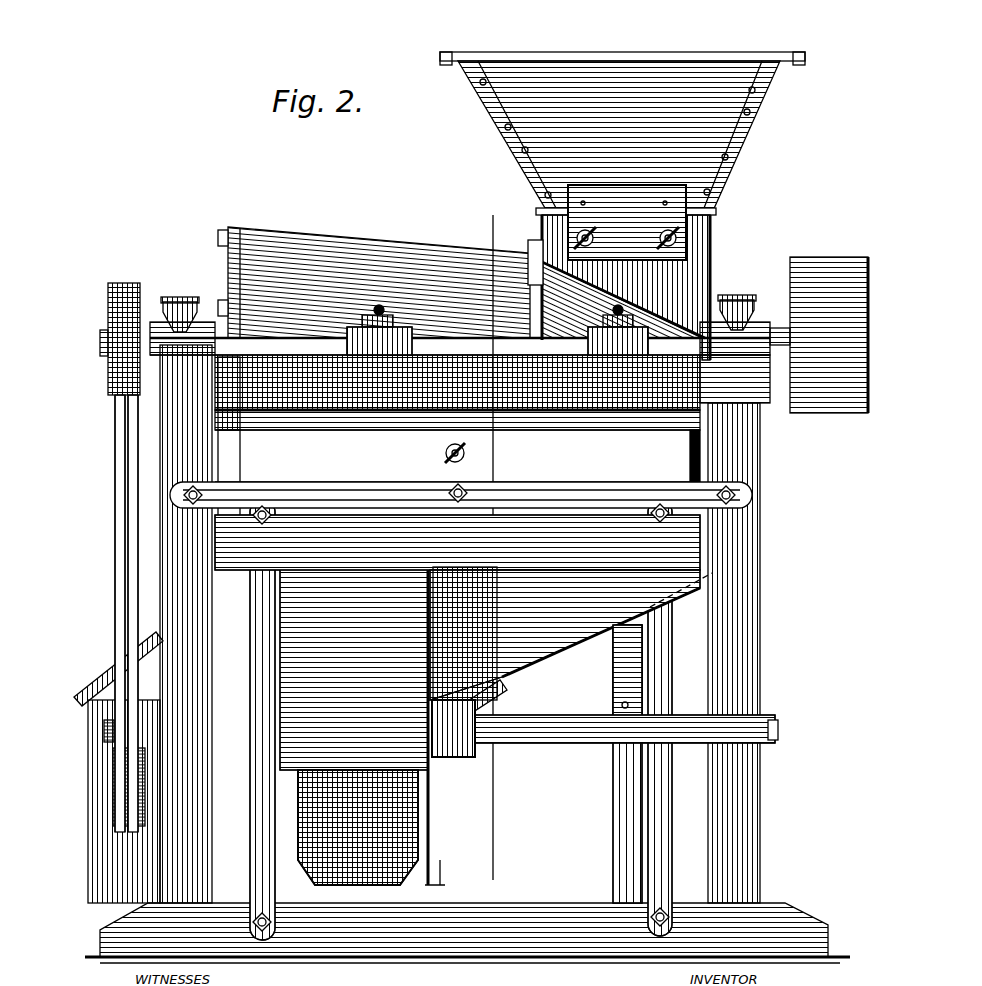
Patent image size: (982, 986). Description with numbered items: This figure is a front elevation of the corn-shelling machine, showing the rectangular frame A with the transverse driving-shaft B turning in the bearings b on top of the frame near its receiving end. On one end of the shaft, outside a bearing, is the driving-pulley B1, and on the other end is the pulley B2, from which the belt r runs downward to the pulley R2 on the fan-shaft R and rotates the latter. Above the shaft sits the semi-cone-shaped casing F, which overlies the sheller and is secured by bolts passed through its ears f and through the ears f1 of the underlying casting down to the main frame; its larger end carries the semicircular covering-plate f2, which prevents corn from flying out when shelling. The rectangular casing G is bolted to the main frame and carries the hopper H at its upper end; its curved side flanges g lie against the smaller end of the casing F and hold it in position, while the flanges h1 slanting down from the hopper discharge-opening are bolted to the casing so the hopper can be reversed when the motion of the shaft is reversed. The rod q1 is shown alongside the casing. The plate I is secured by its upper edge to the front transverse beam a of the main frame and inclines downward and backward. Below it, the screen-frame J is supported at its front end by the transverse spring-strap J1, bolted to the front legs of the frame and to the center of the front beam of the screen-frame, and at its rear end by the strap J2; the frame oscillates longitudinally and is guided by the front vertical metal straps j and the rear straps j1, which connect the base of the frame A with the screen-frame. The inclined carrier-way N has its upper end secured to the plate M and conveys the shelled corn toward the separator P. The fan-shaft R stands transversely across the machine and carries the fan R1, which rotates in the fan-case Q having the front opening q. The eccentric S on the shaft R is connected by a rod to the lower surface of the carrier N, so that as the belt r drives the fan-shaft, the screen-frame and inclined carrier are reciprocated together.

The hopper H is at (622, 120).
The flanges h1 is at (627, 222).
The rectangular casing G is at (700, 272).
The curved side flanges g is at (623, 300).
The feed regulating rod q1 is at (493, 215).
The semi-cone-shaped casing F is at (379, 274).
The semicircular covering-plate f2 is at (222, 274).
The ears f is at (420, 312).
The ears f1 is at (412, 357).
The bearings b is at (178, 318).
The driving-shaft B is at (745, 322).
The driving-pulley B1 is at (829, 335).
The pulley B2 is at (108, 312).
The belt r is at (111, 613).
The front transverse beam a is at (460, 384).
The plate I is at (515, 418).
The screen-frame J is at (459, 684).
The transverse spring-strap J1 is at (461, 480).
The strap J2 is at (572, 700).
The front vertical metal straps j is at (245, 710).
The rear straps j1 is at (618, 790).
The plate M is at (457, 546).
The inclined carrier-way N is at (571, 633).
The fan-case Q is at (354, 725).
The fan R1 is at (358, 827).
The fan-shaft R is at (611, 744).
The pulley R2 is at (100, 722).
The eccentric S is at (452, 758).
The front opening q is at (418, 840).
The frame A is at (180, 772).
The separator P is at (100, 780).